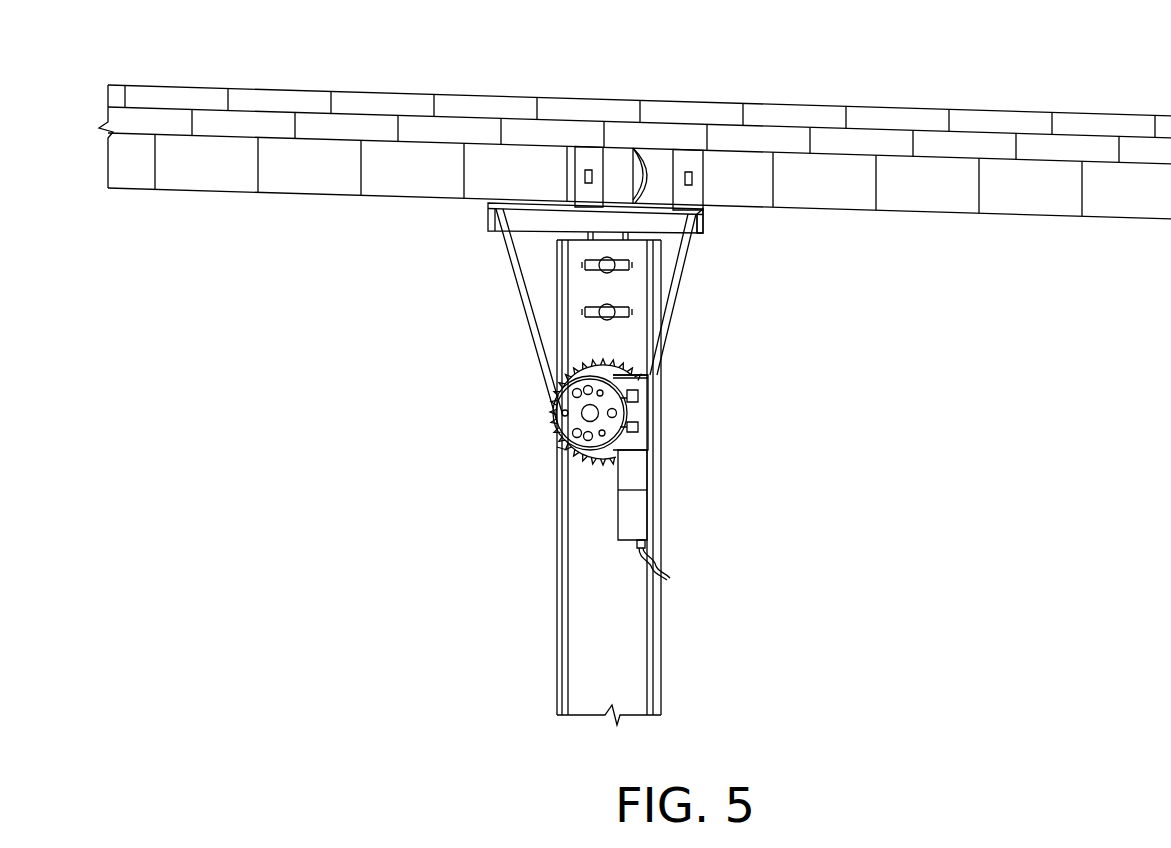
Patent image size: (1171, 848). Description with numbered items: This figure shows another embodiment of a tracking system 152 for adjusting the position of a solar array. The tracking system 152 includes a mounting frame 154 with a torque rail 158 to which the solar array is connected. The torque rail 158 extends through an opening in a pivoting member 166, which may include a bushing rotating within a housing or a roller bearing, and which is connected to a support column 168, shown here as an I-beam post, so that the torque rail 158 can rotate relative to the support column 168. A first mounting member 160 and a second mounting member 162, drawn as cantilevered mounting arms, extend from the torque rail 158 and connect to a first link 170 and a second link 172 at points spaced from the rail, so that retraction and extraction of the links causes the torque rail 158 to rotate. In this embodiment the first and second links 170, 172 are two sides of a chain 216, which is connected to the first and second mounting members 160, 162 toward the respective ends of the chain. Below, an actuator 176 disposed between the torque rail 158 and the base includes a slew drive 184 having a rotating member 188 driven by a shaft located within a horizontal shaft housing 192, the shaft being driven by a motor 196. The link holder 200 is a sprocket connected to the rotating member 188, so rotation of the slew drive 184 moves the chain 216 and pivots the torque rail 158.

The tracking system 152 is at (770, 697).
The mounting frame 154 is at (773, 230).
The torque rail 158 is at (280, 182).
The first mounting member 160 is at (489, 226).
The second mounting member 162 is at (703, 227).
The pivoting member 166 is at (633, 147).
The support column 168 is at (634, 665).
The first link 170 is at (517, 288).
The second link 172 is at (675, 310).
The actuator 176 is at (635, 412).
The slew drive 184 is at (673, 385).
The rotating member 188 is at (552, 403).
The horizontal shaft housing 192 is at (632, 477).
The motor 196 is at (630, 518).
The link holder 200 is at (567, 450).
The chain 216 is at (523, 362).